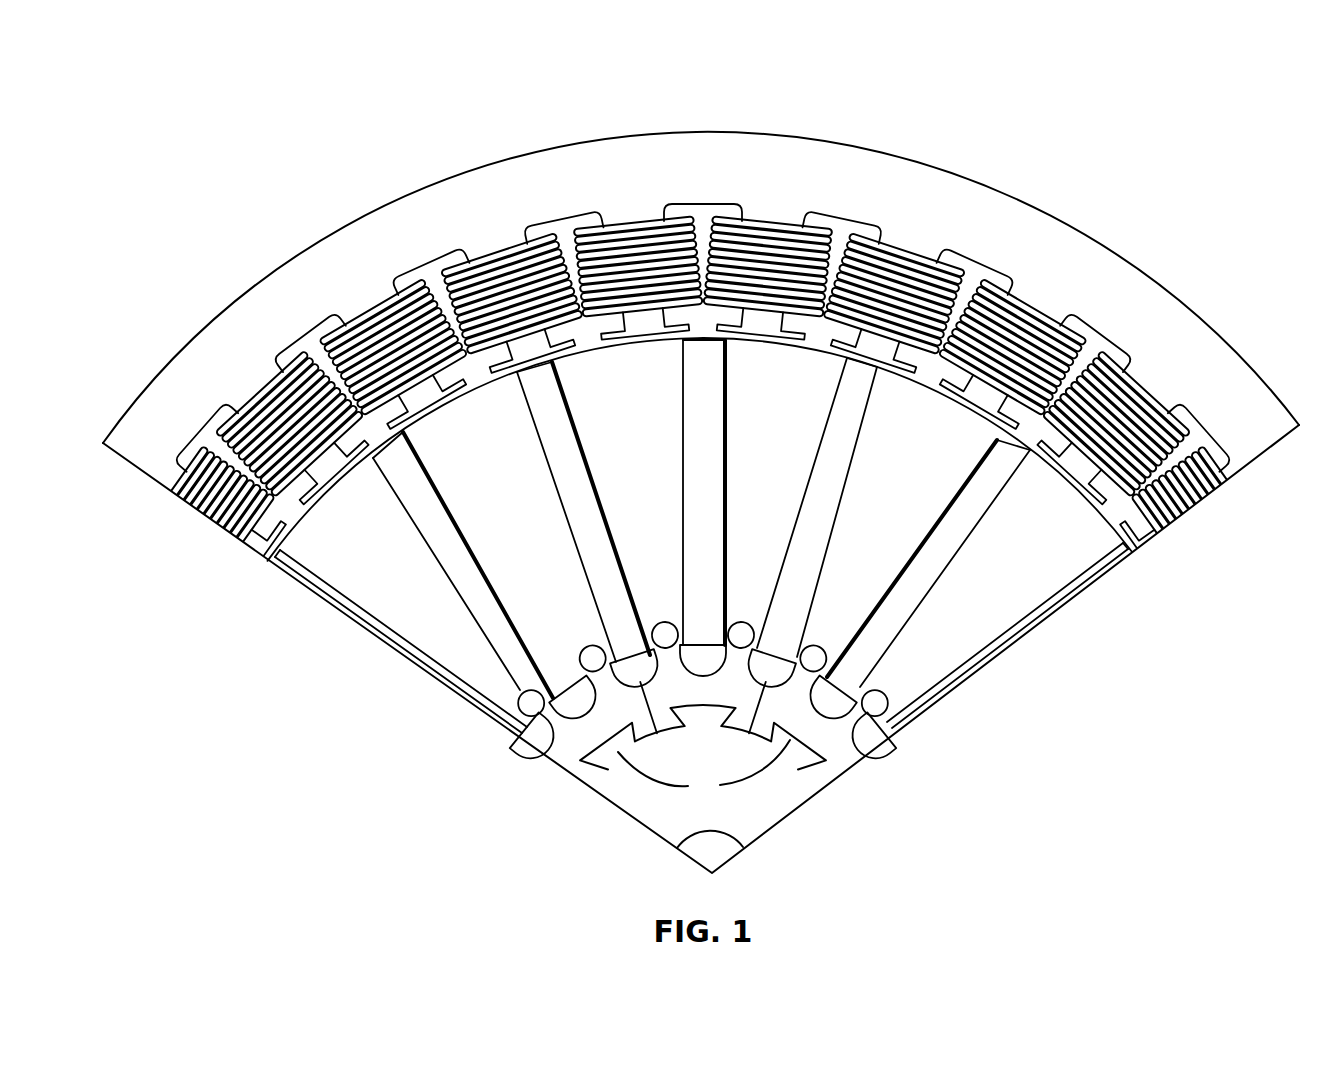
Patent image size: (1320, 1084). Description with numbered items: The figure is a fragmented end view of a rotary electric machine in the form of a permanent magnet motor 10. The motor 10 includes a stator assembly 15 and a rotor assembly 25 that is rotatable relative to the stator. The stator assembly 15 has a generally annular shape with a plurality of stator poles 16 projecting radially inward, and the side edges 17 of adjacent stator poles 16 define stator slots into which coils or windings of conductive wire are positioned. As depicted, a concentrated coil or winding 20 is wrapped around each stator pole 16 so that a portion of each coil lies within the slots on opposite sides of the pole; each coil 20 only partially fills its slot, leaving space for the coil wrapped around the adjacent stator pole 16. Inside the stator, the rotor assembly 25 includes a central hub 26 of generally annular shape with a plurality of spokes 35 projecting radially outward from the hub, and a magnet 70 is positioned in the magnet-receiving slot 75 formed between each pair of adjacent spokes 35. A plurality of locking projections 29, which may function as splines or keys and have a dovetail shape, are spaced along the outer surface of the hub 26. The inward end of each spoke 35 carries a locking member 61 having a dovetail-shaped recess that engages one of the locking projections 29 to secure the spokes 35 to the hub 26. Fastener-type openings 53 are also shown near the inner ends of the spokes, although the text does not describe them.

The permanent magnet motor 10 is at (408, 98).
The stator assembly 15 is at (690, 135).
The stator poles 16 is at (627, 215).
The side edges 17 is at (740, 217).
The concentrated coil or winding 20 is at (995, 300).
The rotor assembly 25 is at (953, 677).
The central hub 26 is at (768, 808).
The locking projections 29 is at (710, 718).
The spokes 35 is at (645, 557).
The fastener openings 53 is at (810, 648).
The locking member 61 is at (822, 770).
The magnet 70 is at (693, 446).
The magnet-receiving slots 75 is at (847, 360).